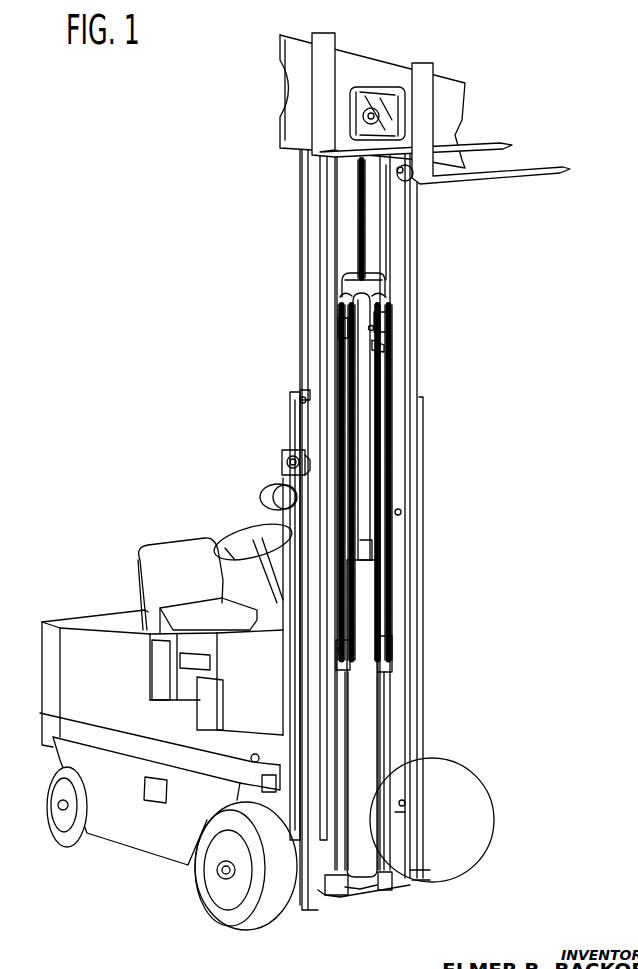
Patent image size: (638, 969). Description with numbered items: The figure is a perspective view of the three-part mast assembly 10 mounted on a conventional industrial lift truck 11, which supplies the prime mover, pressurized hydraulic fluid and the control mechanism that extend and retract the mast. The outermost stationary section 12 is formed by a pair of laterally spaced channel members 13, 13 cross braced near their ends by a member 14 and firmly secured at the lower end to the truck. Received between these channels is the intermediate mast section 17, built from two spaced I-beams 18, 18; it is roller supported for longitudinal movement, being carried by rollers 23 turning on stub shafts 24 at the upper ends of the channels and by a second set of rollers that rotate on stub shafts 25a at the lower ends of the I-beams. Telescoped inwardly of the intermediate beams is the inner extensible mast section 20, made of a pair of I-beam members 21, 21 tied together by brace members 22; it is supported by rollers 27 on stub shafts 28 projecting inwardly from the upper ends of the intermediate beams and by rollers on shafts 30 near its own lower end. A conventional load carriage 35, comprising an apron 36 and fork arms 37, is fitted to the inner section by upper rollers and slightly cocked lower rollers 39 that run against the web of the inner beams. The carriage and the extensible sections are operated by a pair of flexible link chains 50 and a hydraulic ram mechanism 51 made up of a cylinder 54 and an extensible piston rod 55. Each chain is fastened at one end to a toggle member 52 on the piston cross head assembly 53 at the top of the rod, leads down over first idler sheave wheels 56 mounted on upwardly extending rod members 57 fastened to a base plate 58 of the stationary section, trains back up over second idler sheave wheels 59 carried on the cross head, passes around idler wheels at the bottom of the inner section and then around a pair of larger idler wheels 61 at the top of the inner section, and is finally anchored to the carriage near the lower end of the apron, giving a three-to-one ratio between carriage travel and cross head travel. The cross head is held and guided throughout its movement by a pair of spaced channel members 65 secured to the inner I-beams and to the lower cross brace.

The mast assembly 10 is at (256, 265).
The industrial lift truck 11 is at (98, 555).
The stationary section 12 is at (252, 515).
The channel members 13 is at (420, 858).
The cross brace member 14 is at (320, 888).
The intermediate mast section 17 is at (282, 370).
The I-beams 18 is at (298, 420).
The inner extensible mast section 20 is at (299, 210).
The I-beam members 21 is at (306, 296).
The brace members 22 is at (378, 283).
The rollers 23 is at (282, 455).
The stub shafts 24 is at (287, 462).
The stub shafts 25a is at (404, 800).
The rollers 27 is at (300, 392).
The stub shafts 28 is at (299, 400).
The shafts 30 is at (401, 511).
The load carriage 35 is at (463, 88).
The apron 36 is at (290, 125).
The fork arms 37 is at (520, 166).
The lower rollers 39 is at (410, 178).
The flexible link chains 50 is at (356, 180).
The hydraulic ram mechanism 51 is at (373, 548).
The toggle member 52 is at (386, 345).
The piston cross head assembly 53 is at (382, 292).
The cylinder 54 is at (377, 575).
The piston rod 55 is at (360, 450).
The first idler sheave wheels 56 is at (350, 658).
The rod members 57 is at (349, 748).
The base plate 58 is at (390, 885).
The second idler sheave wheels 59 is at (388, 320).
The larger idler wheels 61 is at (378, 100).
The channel members 65 is at (388, 220).